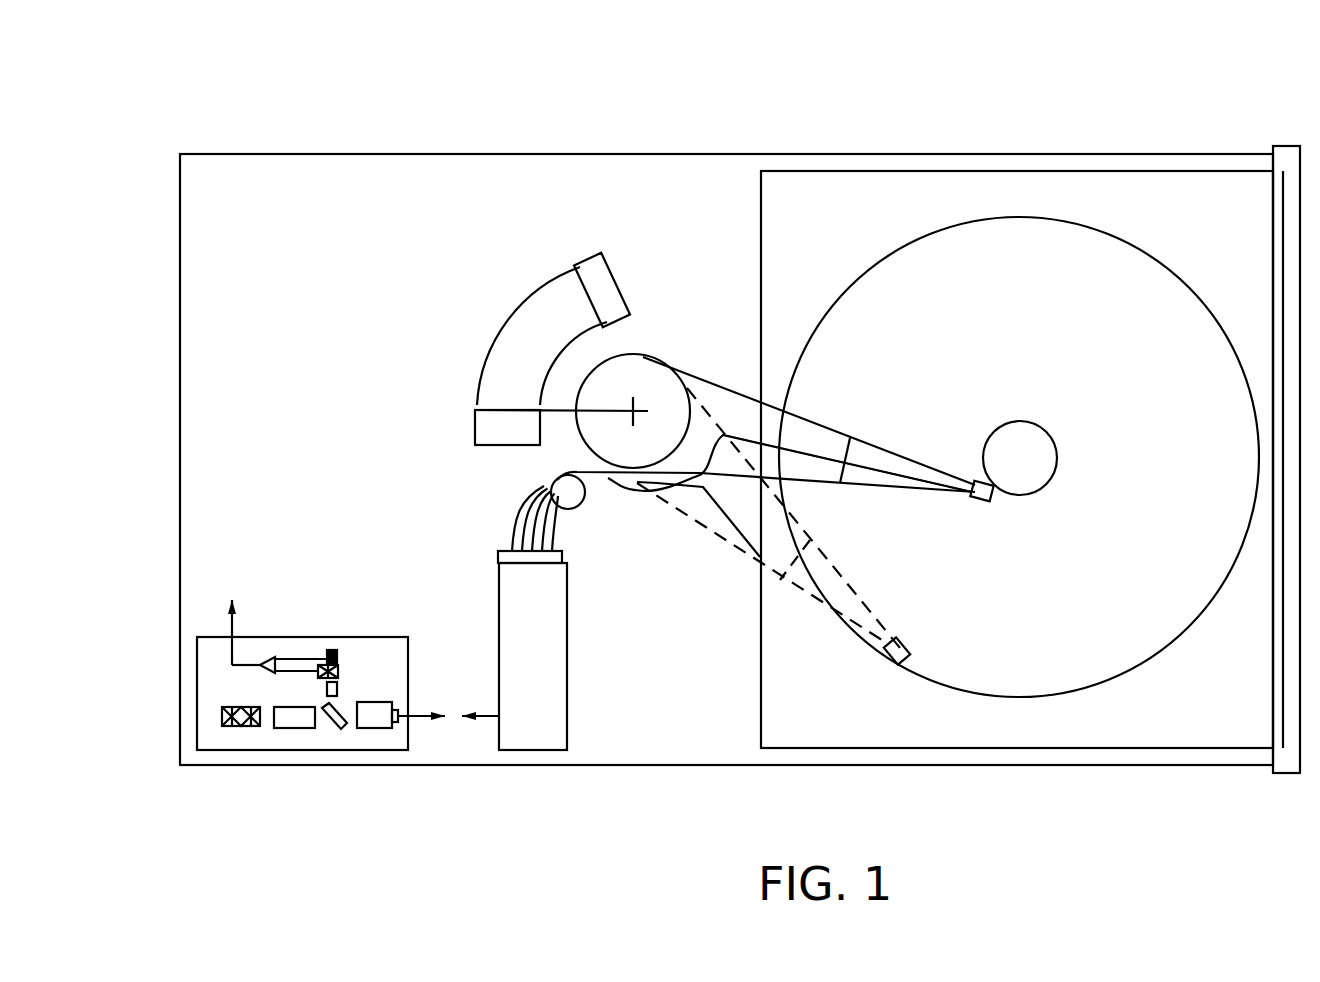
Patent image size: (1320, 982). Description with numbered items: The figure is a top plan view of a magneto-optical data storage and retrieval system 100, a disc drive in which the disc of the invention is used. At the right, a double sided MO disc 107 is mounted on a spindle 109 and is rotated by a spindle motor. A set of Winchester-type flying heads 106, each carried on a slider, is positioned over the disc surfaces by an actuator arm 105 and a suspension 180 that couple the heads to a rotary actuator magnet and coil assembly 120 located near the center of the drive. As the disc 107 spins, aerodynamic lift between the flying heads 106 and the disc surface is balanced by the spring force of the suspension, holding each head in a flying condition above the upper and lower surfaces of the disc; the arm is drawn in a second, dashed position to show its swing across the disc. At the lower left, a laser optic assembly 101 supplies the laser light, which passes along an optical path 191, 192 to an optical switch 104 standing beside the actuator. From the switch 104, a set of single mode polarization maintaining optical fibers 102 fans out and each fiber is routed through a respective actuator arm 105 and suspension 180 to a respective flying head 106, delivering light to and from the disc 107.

The magneto-optical data storage and retrieval system 100 is at (1022, 35).
The laser optic assembly 101 is at (258, 749).
The single mode PM optical fibers 102 is at (513, 498).
The optical switch 104 is at (575, 640).
The actuator arm 105 is at (822, 438).
The flying head 106 is at (990, 503).
The MO disc 107 is at (1042, 218).
The spindle 109 is at (1027, 450).
The rotary actuator magnet and coil assembly 120 is at (575, 273).
The suspension 180 is at (907, 468).
The optical output 191 is at (432, 723).
The optical input 192 is at (472, 723).